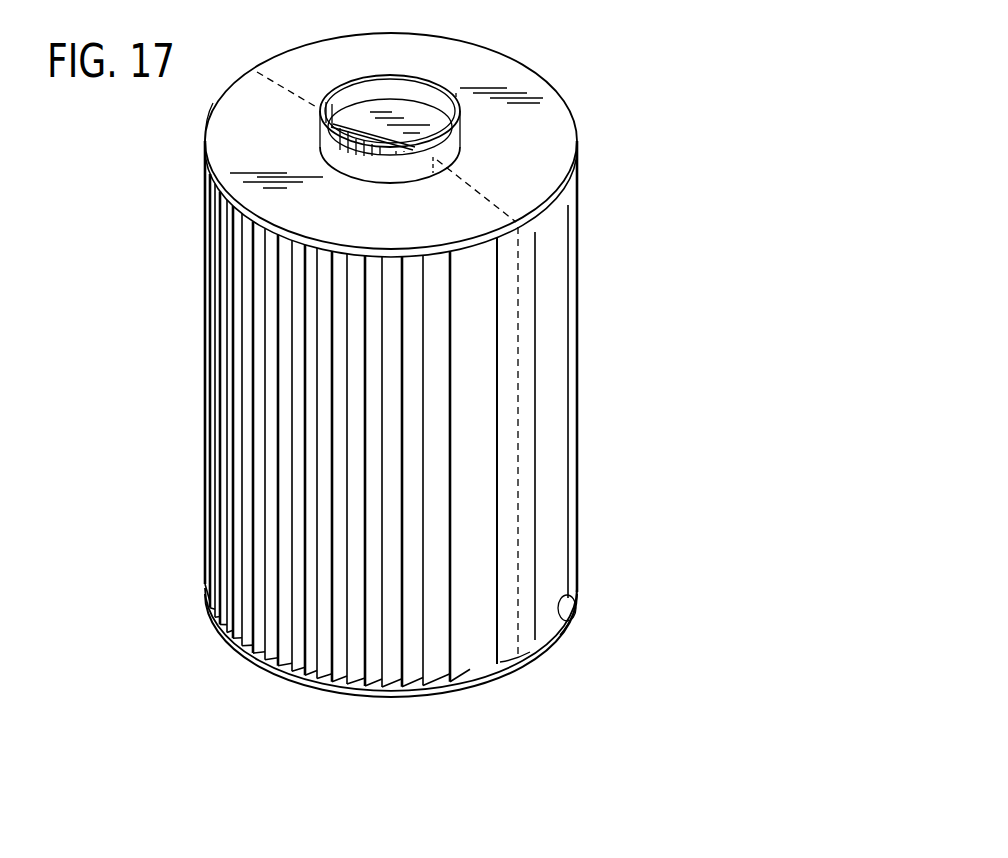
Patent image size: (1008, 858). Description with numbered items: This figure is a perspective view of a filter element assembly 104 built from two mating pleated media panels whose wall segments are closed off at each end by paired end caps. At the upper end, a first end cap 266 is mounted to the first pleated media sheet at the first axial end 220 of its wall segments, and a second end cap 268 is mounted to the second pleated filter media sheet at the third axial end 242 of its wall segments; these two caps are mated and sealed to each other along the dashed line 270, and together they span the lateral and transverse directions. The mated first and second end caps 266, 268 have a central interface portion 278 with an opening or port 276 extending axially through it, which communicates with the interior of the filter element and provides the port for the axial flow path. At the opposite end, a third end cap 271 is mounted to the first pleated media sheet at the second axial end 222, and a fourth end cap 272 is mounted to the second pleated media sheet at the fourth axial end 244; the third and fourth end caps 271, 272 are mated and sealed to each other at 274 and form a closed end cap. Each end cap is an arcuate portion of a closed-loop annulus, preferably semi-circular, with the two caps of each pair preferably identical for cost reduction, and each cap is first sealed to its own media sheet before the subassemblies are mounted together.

The first end cap 266 is at (313, 53).
The opening or port 276 is at (392, 90).
The second end cap 268 is at (212, 141).
The central interface portion 278 is at (453, 152).
The dashed line 270 is at (482, 200).
The first axial end 220 is at (545, 212).
The third axial end 242 is at (498, 240).
The pleated filter media 104 is at (518, 397).
The fourth axial end 244 is at (477, 667).
The second axial end 222 is at (578, 590).
The third end cap 271 is at (550, 645).
The fourth end cap 272 is at (435, 692).
The mating and sealing location 274 is at (520, 664).